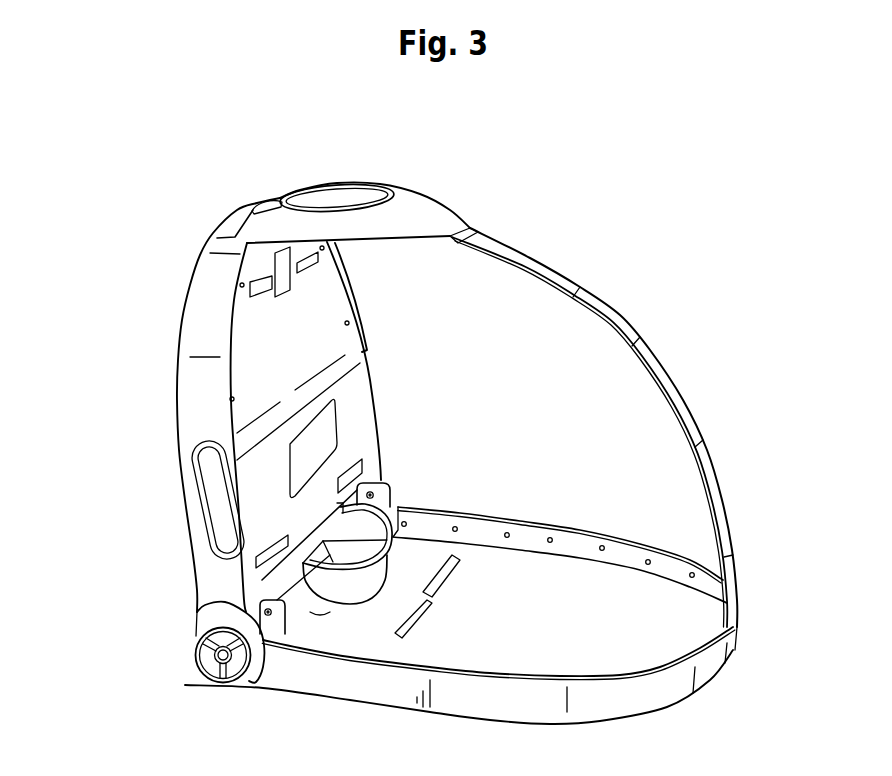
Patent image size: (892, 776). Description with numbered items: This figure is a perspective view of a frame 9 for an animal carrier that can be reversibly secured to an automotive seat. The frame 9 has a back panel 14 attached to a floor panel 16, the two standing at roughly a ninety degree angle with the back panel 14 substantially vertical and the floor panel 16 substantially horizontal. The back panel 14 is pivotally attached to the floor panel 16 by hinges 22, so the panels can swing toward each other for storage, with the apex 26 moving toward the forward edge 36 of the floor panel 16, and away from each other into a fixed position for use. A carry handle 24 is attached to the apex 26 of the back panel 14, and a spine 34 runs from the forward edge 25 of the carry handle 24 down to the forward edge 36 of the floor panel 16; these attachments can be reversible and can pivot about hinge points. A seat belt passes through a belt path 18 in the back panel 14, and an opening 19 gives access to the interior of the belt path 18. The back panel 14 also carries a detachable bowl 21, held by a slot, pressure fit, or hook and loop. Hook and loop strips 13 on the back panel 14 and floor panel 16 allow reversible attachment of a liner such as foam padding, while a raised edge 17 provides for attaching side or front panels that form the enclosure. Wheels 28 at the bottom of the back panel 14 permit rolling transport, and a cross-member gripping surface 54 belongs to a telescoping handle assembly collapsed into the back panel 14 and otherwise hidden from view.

The frame 9 is at (138, 184).
The hook and loop strips 13 is at (310, 265).
The back panel 14 is at (190, 377).
The floor panel 16 is at (569, 630).
The raised edge 17 is at (573, 545).
The belt path 18 is at (212, 498).
The opening 19 is at (322, 437).
The bowl 21 is at (353, 585).
The hinges 22 is at (385, 482).
The carry handle 24 is at (353, 198).
The forward edge of the carry handle 25 is at (470, 225).
The apex 26 is at (270, 202).
The wheels 28 is at (207, 680).
The spine 34 is at (613, 317).
The forward edge of the floor panel 36 is at (738, 620).
The cross-member gripping surface 54 is at (243, 213).